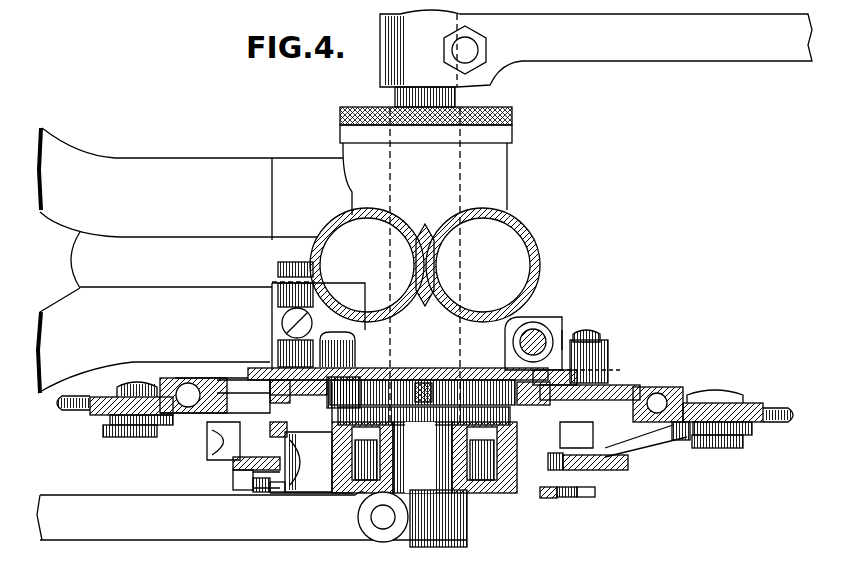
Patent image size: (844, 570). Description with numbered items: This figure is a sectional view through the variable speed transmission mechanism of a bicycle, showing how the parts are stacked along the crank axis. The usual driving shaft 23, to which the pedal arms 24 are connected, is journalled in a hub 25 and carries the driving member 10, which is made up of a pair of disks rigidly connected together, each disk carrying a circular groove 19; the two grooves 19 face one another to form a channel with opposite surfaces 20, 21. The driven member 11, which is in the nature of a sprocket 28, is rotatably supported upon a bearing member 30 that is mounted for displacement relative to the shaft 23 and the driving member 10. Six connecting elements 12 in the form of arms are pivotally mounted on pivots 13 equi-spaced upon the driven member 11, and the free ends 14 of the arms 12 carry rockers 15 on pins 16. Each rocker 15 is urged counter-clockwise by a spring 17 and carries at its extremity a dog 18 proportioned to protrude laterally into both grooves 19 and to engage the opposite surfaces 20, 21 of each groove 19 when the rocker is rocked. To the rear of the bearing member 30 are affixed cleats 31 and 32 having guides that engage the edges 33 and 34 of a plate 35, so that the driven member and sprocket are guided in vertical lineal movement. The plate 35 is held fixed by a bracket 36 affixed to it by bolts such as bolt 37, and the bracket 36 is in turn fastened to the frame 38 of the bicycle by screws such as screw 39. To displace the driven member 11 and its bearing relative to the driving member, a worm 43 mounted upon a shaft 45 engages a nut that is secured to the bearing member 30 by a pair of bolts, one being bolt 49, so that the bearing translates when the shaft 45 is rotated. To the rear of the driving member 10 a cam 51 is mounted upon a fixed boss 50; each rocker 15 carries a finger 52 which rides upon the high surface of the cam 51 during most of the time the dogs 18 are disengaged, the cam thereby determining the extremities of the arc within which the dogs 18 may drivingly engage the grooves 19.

The driving member 10 is at (505, 497).
The driven member 11 is at (170, 385).
The connecting elements 12 is at (107, 422).
The pivots 13 is at (120, 432).
The ends of the arms 14 is at (268, 492).
The rockers 15 is at (255, 470).
The pins 16 is at (253, 490).
The spring 17 is at (255, 483).
The dog 18 is at (517, 495).
The grooves 19 is at (545, 495).
The opposite surface of groove 20 is at (300, 492).
The opposite surface of groove 21 is at (323, 497).
The driving shaft 23 is at (427, 480).
The pedal arms 24 is at (687, 52).
The hub 25 is at (480, 345).
The sprocket 28 is at (70, 412).
The bearing member 30 is at (213, 372).
The cleat 31 is at (272, 372).
The cleat 32 is at (578, 320).
The edge of plate 33 is at (271, 368).
The edge of plate 34 is at (597, 375).
The plate 35 is at (448, 375).
The bracket 36 is at (283, 269).
The bolt 37 is at (345, 340).
The frame 38 is at (186, 222).
The screw 39 is at (288, 317).
The worm 43 is at (562, 350).
The shaft 45 is at (535, 340).
The bolt 49 is at (597, 337).
The fixed boss 50 is at (398, 392).
The cam 51 is at (507, 358).
The finger 52 is at (230, 457).